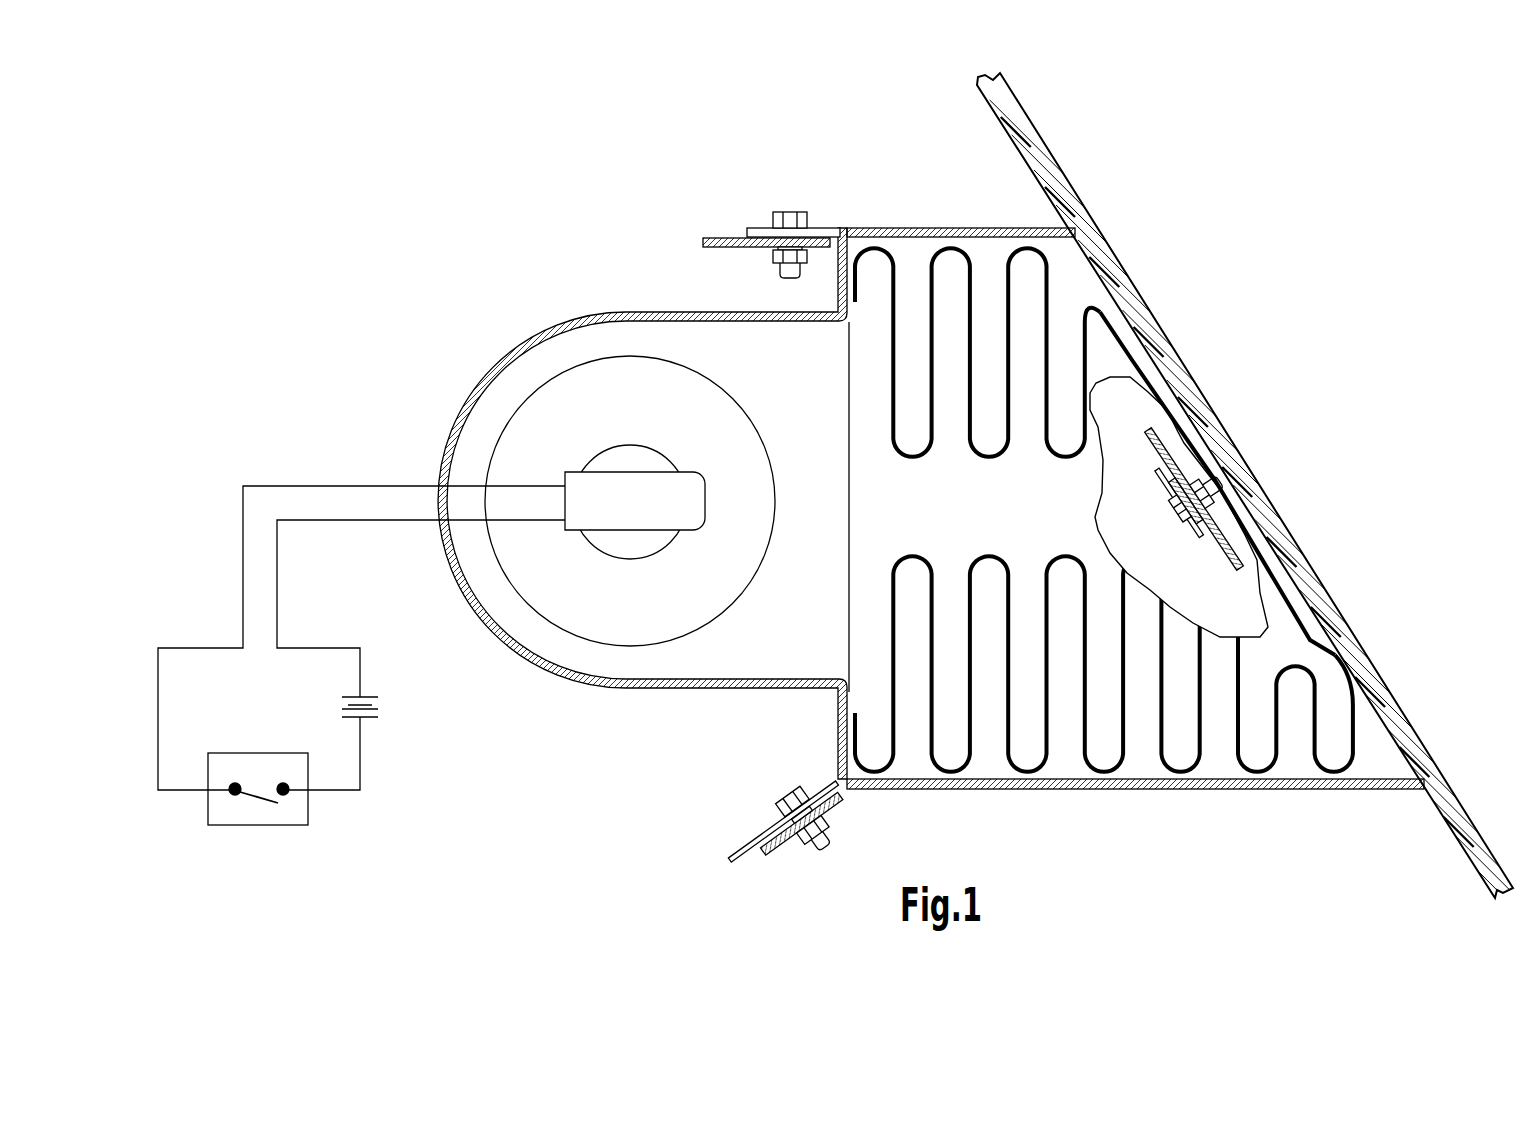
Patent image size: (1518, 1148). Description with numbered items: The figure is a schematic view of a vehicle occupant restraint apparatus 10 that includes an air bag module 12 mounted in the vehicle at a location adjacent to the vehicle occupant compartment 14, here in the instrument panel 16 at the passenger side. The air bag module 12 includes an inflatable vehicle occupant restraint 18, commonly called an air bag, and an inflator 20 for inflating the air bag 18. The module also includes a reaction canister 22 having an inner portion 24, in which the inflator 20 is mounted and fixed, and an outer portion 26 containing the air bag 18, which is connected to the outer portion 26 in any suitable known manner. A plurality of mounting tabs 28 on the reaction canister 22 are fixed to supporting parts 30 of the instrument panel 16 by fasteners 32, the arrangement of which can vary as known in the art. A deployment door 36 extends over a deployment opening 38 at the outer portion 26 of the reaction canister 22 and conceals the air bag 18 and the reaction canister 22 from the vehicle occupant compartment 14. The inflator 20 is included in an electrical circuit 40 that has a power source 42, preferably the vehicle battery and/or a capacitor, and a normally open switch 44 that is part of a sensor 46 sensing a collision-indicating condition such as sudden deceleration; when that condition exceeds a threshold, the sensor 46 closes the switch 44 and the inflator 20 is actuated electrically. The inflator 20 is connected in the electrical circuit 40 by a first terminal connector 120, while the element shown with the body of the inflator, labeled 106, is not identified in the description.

The vehicle occupant restraint apparatus 10 is at (1222, 126).
The air bag module 12 is at (613, 454).
The vehicle occupant compartment 14 is at (1356, 327).
The instrument panel 16 is at (1032, 122).
The inflatable vehicle occupant restraint 18 is at (1104, 474).
The inflator 20 is at (627, 358).
The reaction canister 22 is at (520, 342).
The inner portion 24 is at (732, 310).
The outer portion 26 is at (928, 226).
The mounting tabs 28 is at (762, 232).
The supporting parts 30 is at (756, 252).
The fasteners 32 is at (793, 208).
The deployment door 36 is at (1118, 292).
The deployment opening 38 is at (1152, 353).
The electrical circuit 40 is at (356, 688).
The power source 42 is at (368, 718).
The switch 44 is at (252, 795).
The sensor 46 is at (207, 807).
The bulb 106 is at (610, 443).
The first terminal connector 120 is at (603, 492).